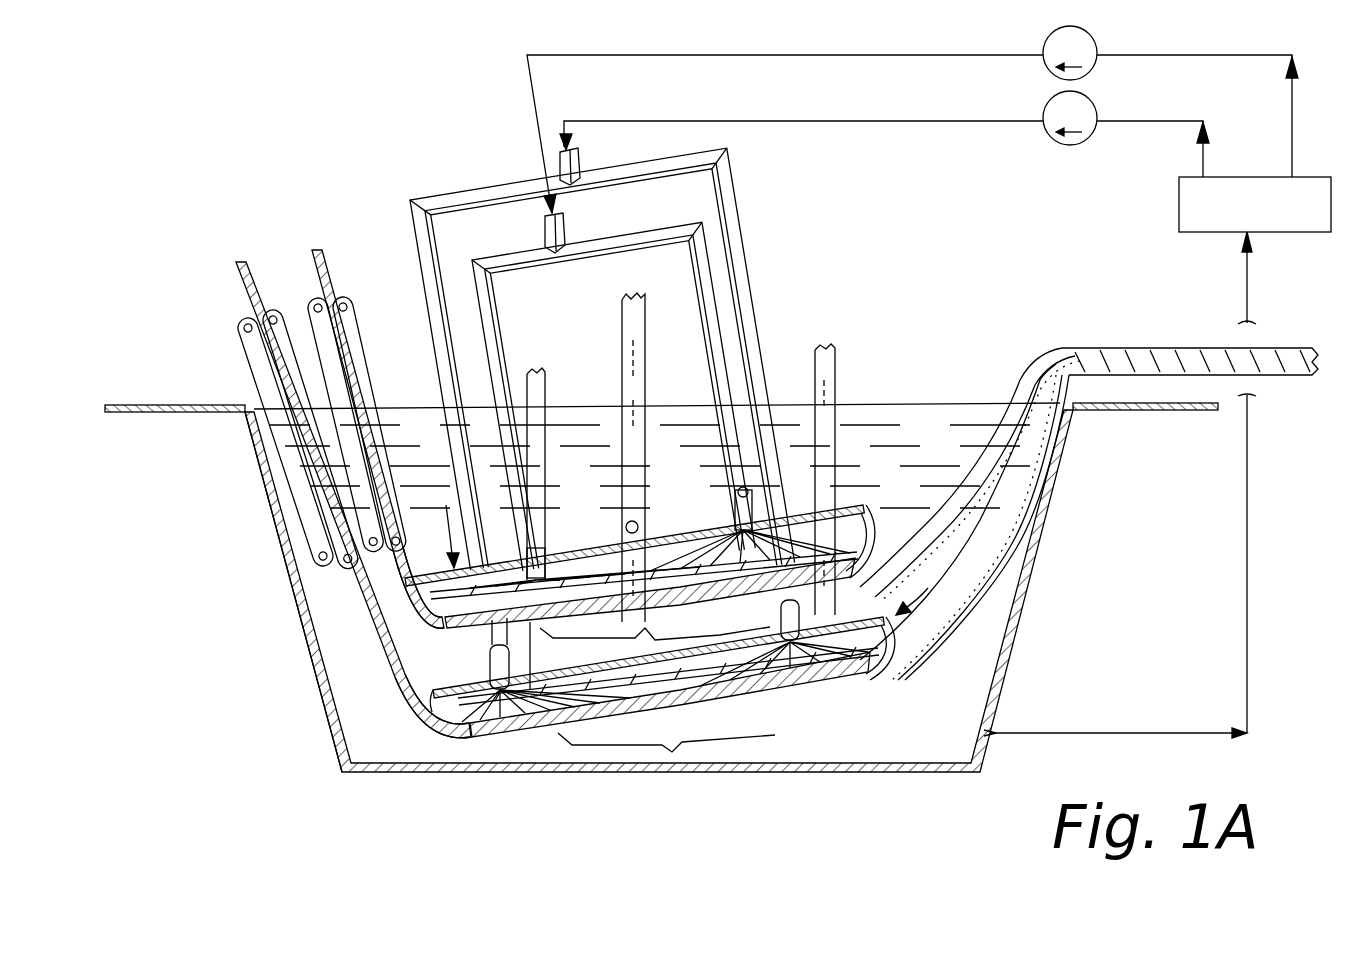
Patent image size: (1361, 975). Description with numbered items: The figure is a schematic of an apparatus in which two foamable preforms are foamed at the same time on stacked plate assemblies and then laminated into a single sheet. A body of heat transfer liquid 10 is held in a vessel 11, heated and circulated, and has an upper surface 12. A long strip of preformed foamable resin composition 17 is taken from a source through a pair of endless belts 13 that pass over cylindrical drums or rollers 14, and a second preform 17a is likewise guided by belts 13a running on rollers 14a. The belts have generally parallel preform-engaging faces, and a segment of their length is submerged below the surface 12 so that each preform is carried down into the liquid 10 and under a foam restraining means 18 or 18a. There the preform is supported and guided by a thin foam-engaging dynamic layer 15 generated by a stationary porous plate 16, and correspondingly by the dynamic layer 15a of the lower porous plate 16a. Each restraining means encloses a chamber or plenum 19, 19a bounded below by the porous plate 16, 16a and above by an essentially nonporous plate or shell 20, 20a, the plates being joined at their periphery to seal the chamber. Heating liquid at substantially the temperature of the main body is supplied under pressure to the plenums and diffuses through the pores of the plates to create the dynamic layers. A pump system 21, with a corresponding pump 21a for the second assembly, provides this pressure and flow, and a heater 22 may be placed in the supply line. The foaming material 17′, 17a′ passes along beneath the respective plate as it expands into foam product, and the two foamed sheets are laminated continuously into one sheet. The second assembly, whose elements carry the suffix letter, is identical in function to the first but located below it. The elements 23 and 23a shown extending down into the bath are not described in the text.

The body of heat transfer liquid 10 is at (905, 732).
The vessel 11 is at (275, 533).
The upper surface 12 is at (872, 425).
The endless belts 13 is at (345, 382).
The endless belts 13a is at (285, 377).
The cylindrical drums 14 is at (338, 314).
The cylindrical drums 14a is at (245, 325).
The dynamic layer 15 is at (468, 628).
The dynamic layer 15a is at (470, 738).
The porous plate 16 is at (402, 578).
The porous plate 16a is at (420, 718).
The foamable preform 17 is at (322, 255).
The foamable preform 17a is at (238, 283).
The perforated plate 17′ is at (625, 644).
The perforated plate 17a′ is at (668, 705).
The foam restraining means 18 is at (432, 524).
The foam restraining means 18a is at (914, 586).
The chamber or plenum 19 is at (655, 555).
The chamber or plenum 19a is at (755, 620).
The nonporous plate or shell 20 is at (560, 560).
The nonporous plate or shell 20a is at (490, 684).
The pump system 21 is at (1045, 60).
The pump system 21a is at (1090, 110).
The heater 22 is at (1290, 232).
The holder rod 23 is at (622, 375).
The holder rod 23a is at (540, 378).